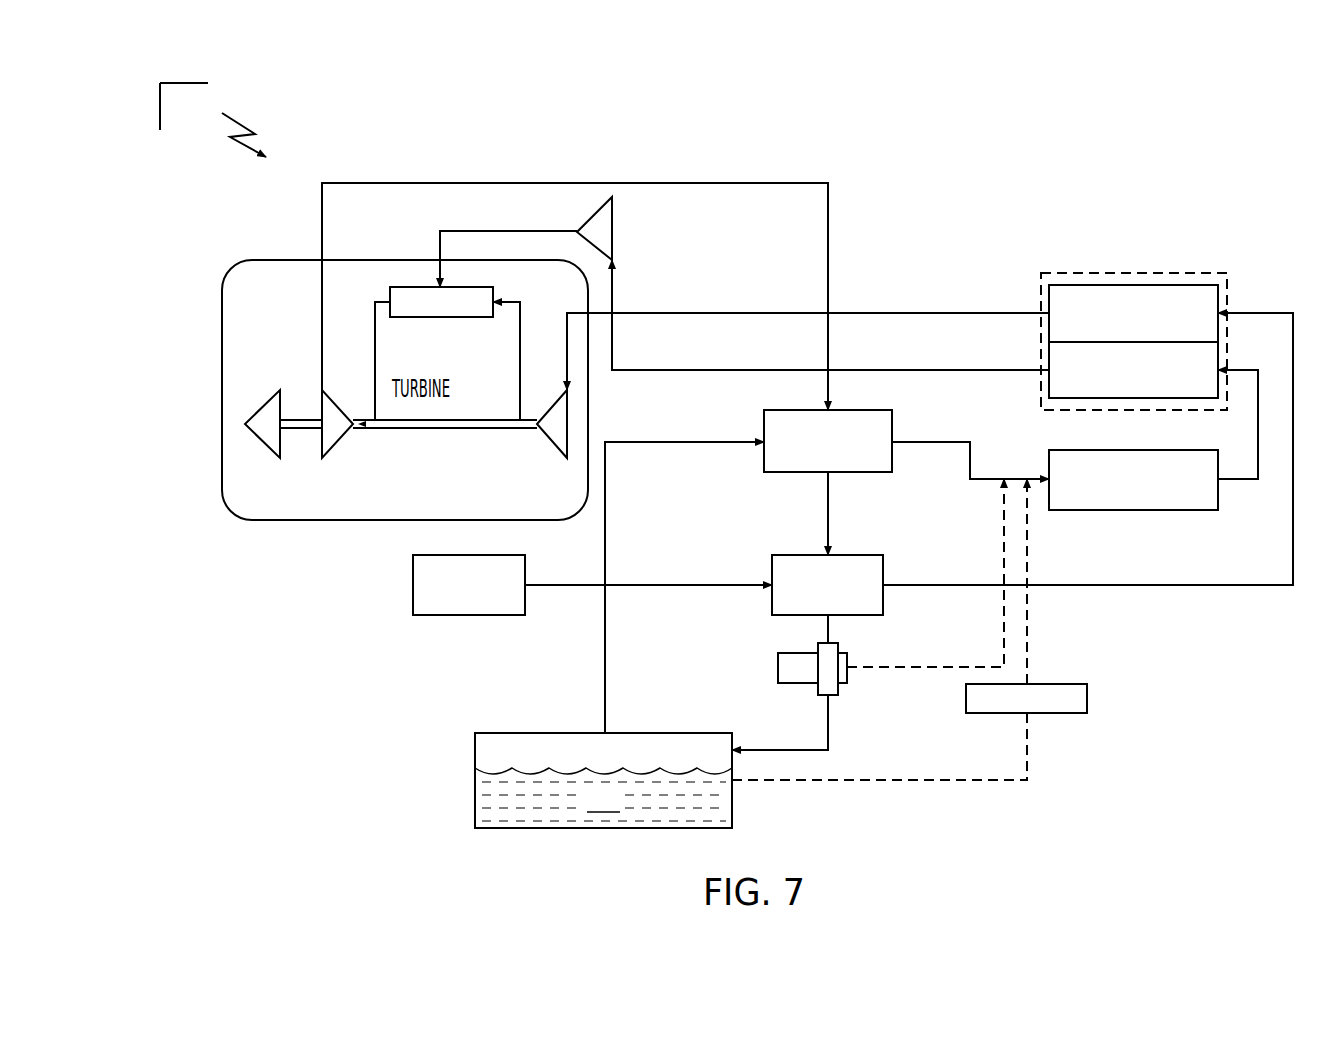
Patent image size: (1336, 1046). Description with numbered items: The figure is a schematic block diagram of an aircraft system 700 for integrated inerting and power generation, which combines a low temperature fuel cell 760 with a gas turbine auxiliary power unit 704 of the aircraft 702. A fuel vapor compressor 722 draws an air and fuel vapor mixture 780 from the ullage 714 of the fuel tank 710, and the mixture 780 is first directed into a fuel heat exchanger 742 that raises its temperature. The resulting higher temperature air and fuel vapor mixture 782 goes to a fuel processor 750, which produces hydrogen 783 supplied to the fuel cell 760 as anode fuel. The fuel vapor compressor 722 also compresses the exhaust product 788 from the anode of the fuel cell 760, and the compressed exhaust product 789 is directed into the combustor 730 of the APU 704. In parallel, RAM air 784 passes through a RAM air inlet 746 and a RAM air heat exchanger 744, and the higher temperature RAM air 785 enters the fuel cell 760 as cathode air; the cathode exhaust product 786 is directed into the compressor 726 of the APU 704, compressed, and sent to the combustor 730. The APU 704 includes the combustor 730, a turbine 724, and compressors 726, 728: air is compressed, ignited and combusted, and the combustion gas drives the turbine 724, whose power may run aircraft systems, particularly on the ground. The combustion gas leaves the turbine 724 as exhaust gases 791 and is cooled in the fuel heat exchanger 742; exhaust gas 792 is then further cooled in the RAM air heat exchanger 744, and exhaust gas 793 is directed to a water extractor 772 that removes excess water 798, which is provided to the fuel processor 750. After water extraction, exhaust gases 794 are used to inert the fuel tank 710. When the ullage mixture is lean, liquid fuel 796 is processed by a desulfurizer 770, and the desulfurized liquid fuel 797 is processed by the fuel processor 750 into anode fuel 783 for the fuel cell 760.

The aircraft system 700 is at (217, 125).
The aircraft 702 is at (160, 104).
The auxiliary power unit 704 is at (262, 260).
The fuel tank 710 is at (475, 794).
The ullage 714 is at (485, 740).
The fuel vapor compressor 722 is at (616, 226).
The turbine 724 is at (340, 442).
The compressor 726 is at (550, 442).
The compressor 728 is at (268, 450).
The combustor 730 is at (428, 317).
The fuel heat exchanger 742 is at (785, 472).
The RAM air heat exchanger 744 is at (883, 566).
The RAM air inlet 746 is at (413, 586).
The fuel processor 750 is at (1133, 510).
The fuel cell 760 is at (1153, 273).
The desulfurizer 770 is at (1087, 698).
The water extractor 772 is at (778, 655).
The air and fuel vapor mixture 780 is at (605, 514).
The higher temperature air and fuel vapor mixture 782 is at (950, 443).
The hydrogen 783 is at (1235, 481).
The RAM air 784 is at (652, 585).
The higher temperature RAM air 785 is at (1152, 585).
The cathode exhaust product 786 is at (732, 313).
The anode exhaust product 788 is at (925, 370).
The compressed exhaust product 789 is at (525, 231).
The exhaust gases 791 is at (416, 183).
The exhaust gas 792 is at (830, 500).
The exhaust gas 793 is at (830, 628).
The exhaust gases 794 is at (830, 718).
The liquid fuel 796 is at (1027, 735).
The desulfurized liquid fuel 797 is at (1027, 635).
The excess water 798 is at (1004, 648).